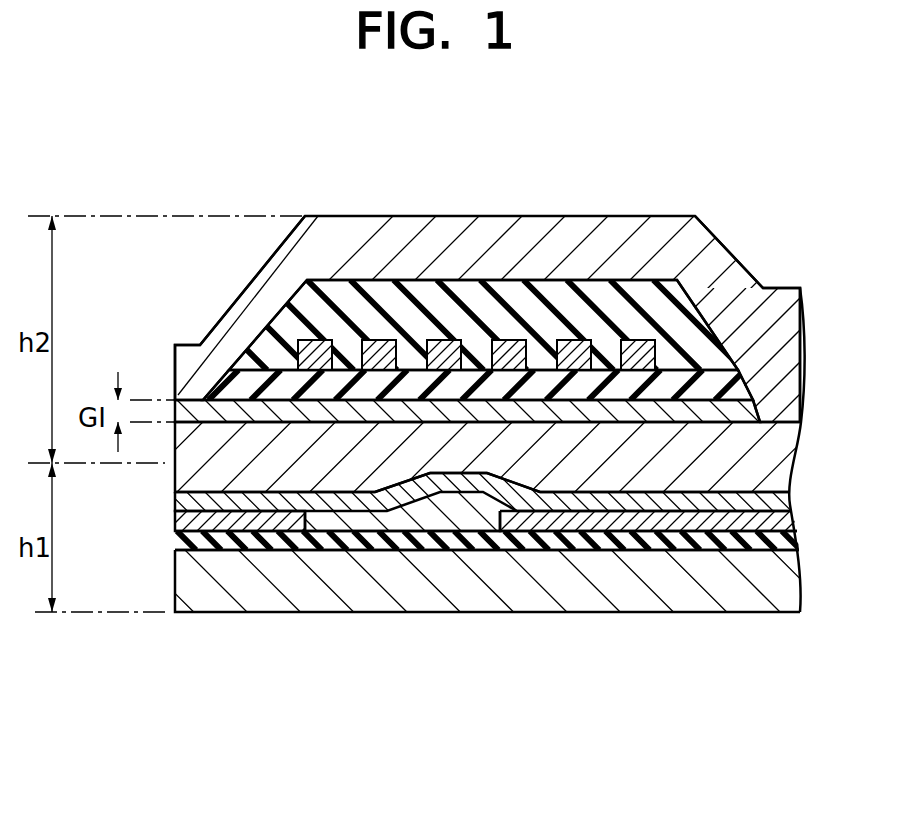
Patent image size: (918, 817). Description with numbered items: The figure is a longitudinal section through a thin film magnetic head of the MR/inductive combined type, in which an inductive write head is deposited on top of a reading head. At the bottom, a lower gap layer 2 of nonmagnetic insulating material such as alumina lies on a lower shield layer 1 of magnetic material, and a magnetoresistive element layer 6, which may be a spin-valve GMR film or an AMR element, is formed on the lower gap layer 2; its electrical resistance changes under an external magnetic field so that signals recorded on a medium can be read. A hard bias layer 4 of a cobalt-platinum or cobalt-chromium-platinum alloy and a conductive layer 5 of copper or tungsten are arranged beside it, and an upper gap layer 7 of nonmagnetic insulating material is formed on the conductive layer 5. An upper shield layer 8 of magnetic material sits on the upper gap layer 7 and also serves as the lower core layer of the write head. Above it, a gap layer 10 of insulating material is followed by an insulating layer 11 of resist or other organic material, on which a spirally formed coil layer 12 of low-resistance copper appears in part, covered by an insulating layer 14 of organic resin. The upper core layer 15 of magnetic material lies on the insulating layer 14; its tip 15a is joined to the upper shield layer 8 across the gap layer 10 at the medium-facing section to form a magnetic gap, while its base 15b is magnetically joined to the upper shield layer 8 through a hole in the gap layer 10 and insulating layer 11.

The lower shield layer 1 is at (262, 595).
The lower gap layer 2 is at (177, 543).
The hard bias layer 4 is at (387, 517).
The conductive layer 5 is at (640, 513).
The magnetoresistive element layer 6 is at (178, 524).
The upper gap layer 7 is at (200, 500).
The upper shield layer 8 is at (203, 482).
The gap layer 10 is at (178, 417).
The insulating layer 11 is at (410, 382).
The coil layer 12 is at (323, 338).
The insulating layer 14 is at (615, 305).
The upper core layer 15 is at (495, 253).
The tip of the upper core layer 15a is at (188, 365).
The base of the upper core layer 15b is at (775, 360).